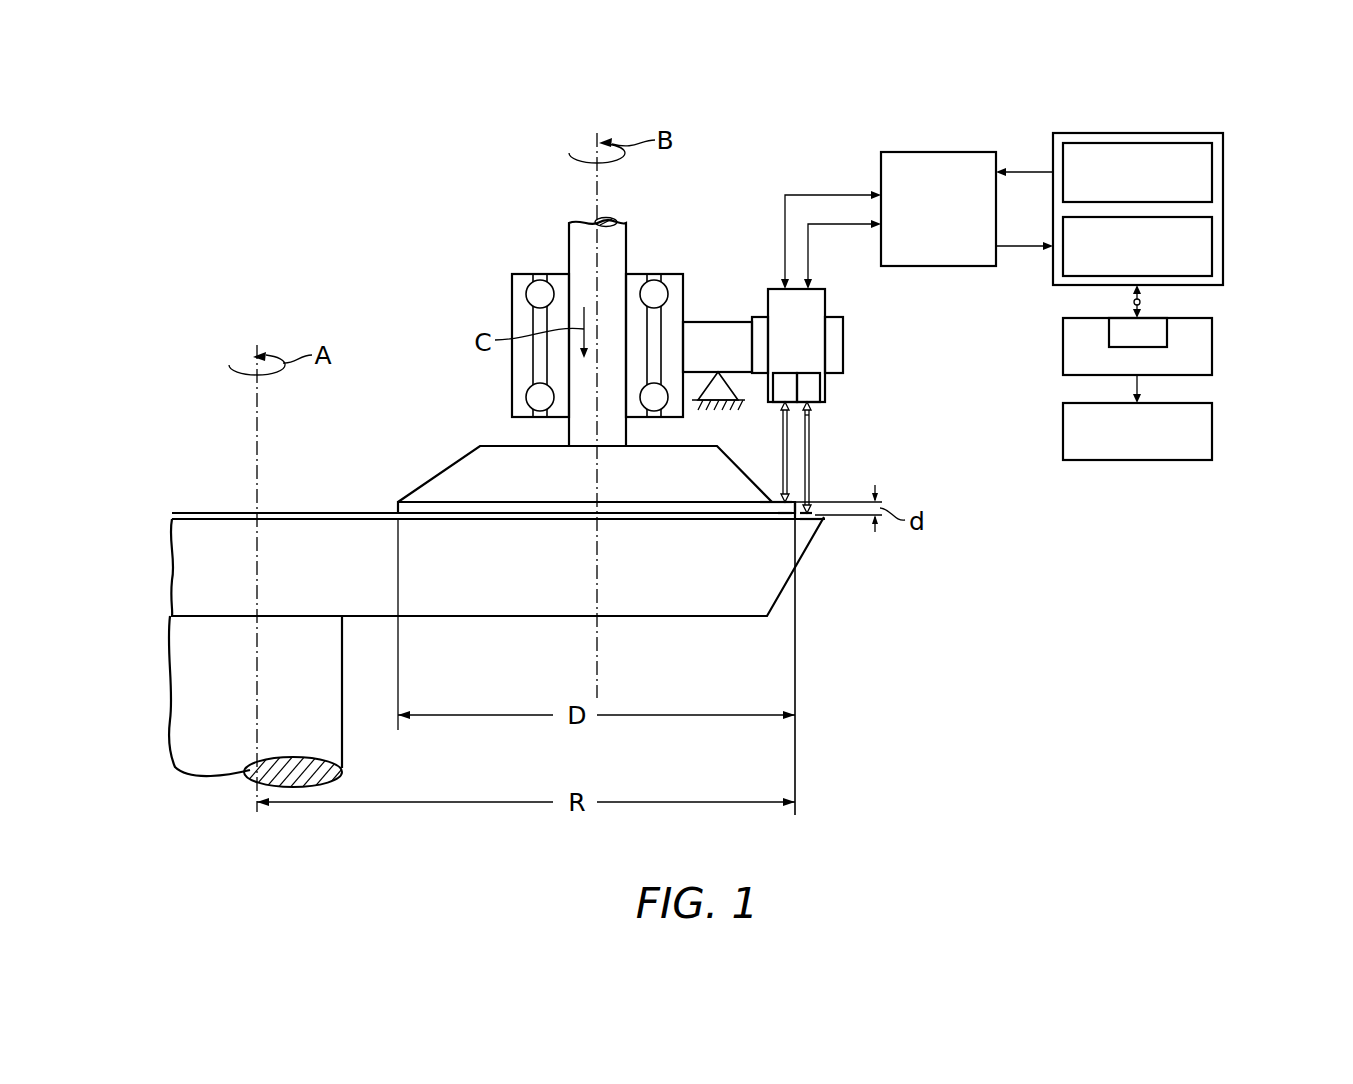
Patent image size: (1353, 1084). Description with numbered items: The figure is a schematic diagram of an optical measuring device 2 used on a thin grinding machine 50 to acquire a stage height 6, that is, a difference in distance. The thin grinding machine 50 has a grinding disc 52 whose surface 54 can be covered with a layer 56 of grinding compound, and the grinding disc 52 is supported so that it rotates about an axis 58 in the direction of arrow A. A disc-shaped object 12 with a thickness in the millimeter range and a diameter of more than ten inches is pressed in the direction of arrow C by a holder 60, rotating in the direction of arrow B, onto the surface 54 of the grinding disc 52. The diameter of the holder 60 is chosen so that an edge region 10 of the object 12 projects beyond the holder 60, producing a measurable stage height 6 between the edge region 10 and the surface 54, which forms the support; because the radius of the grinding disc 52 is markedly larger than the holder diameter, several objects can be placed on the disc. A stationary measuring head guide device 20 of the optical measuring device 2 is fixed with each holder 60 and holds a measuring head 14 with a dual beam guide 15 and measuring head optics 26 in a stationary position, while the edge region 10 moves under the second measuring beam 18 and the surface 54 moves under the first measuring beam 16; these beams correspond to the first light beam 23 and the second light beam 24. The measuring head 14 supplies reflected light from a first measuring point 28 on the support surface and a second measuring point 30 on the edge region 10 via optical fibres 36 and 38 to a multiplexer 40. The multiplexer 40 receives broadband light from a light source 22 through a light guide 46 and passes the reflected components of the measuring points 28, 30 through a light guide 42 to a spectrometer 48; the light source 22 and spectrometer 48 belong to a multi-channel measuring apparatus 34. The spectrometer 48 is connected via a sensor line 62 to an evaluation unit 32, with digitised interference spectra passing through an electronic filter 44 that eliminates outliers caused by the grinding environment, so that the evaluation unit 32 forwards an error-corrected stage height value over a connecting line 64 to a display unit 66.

The optical measuring device 2 is at (759, 191).
The stage height 6 is at (802, 512).
The edge region 10 is at (768, 498).
The object 12 is at (647, 508).
The measuring head 14 is at (834, 311).
The dual beam guide 15 is at (818, 419).
The first measuring beam 16 is at (810, 463).
The second measuring beam 18 is at (782, 437).
The measuring head guide device 20 is at (716, 322).
The light source 22 is at (1207, 172).
The first light beam 23 is at (812, 512).
The second light beam 24 is at (782, 497).
The measuring head optics 26 is at (822, 389).
The first measuring point 28 is at (810, 516).
The second measuring point 30 is at (783, 505).
The evaluation unit 32 is at (1207, 345).
The multi-channel measuring apparatus 34 is at (1037, 136).
The optical fibre 36 is at (842, 191).
The optical fibre 38 is at (840, 227).
The multiplexer 40 is at (938, 152).
The light guide 42 is at (1018, 252).
The electronic filter 44 is at (1150, 323).
The light guide 46 is at (1018, 178).
The spectrometer 48 is at (1207, 248).
The thin grinding machine 50 is at (396, 325).
The grinding disc 52 is at (323, 505).
The surface of grinding disc 54 is at (215, 505).
The layer 56 is at (323, 520).
The axis of grinding disc 58 is at (263, 686).
The holder 60 is at (465, 467).
The sensor line 62 is at (1132, 302).
The connecting line 64 is at (1132, 388).
The display unit 66 is at (1207, 430).